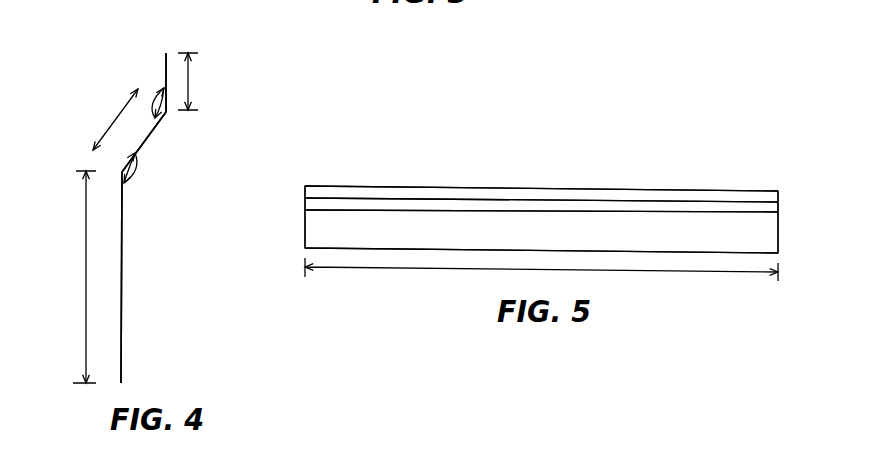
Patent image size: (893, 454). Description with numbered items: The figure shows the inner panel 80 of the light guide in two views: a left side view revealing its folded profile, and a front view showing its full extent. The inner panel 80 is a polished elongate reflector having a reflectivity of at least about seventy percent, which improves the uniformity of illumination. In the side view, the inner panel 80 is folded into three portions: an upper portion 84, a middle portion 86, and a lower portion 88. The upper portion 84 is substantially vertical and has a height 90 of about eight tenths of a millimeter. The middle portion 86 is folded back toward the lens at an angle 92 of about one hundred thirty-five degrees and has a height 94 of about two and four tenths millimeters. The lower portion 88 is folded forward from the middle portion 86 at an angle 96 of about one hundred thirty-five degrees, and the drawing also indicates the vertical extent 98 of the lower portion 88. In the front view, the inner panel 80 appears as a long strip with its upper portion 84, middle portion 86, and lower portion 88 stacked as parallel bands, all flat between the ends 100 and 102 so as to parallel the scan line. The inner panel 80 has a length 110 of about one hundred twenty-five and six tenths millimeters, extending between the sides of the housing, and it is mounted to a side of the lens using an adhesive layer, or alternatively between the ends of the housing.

In FIG. 4, the inner panel 80 is at (77, 62).
In FIG. 5, the inner panel 80 is at (495, 187).
In FIG. 4, the upper portion 84 is at (165, 57).
In FIG. 5, the upper portion 84 is at (780, 193).
In FIG. 4, the middle portion 86 is at (150, 135).
In FIG. 5, the middle portion 86 is at (773, 208).
In FIG. 4, the lower portion 88 is at (122, 262).
In FIG. 5, the lower portion 88 is at (773, 237).
In FIG. 4, the height 90 is at (190, 88).
In FIG. 4, the angle 92 is at (153, 90).
In FIG. 4, the height 94 is at (115, 115).
In FIG. 4, the angle 96 is at (140, 173).
In FIG. 4, the base portion length 98 is at (86, 267).
In FIG. 5, the end 100 is at (310, 185).
In FIG. 5, the end 102 is at (777, 191).
In FIG. 5, the length 110 is at (437, 270).